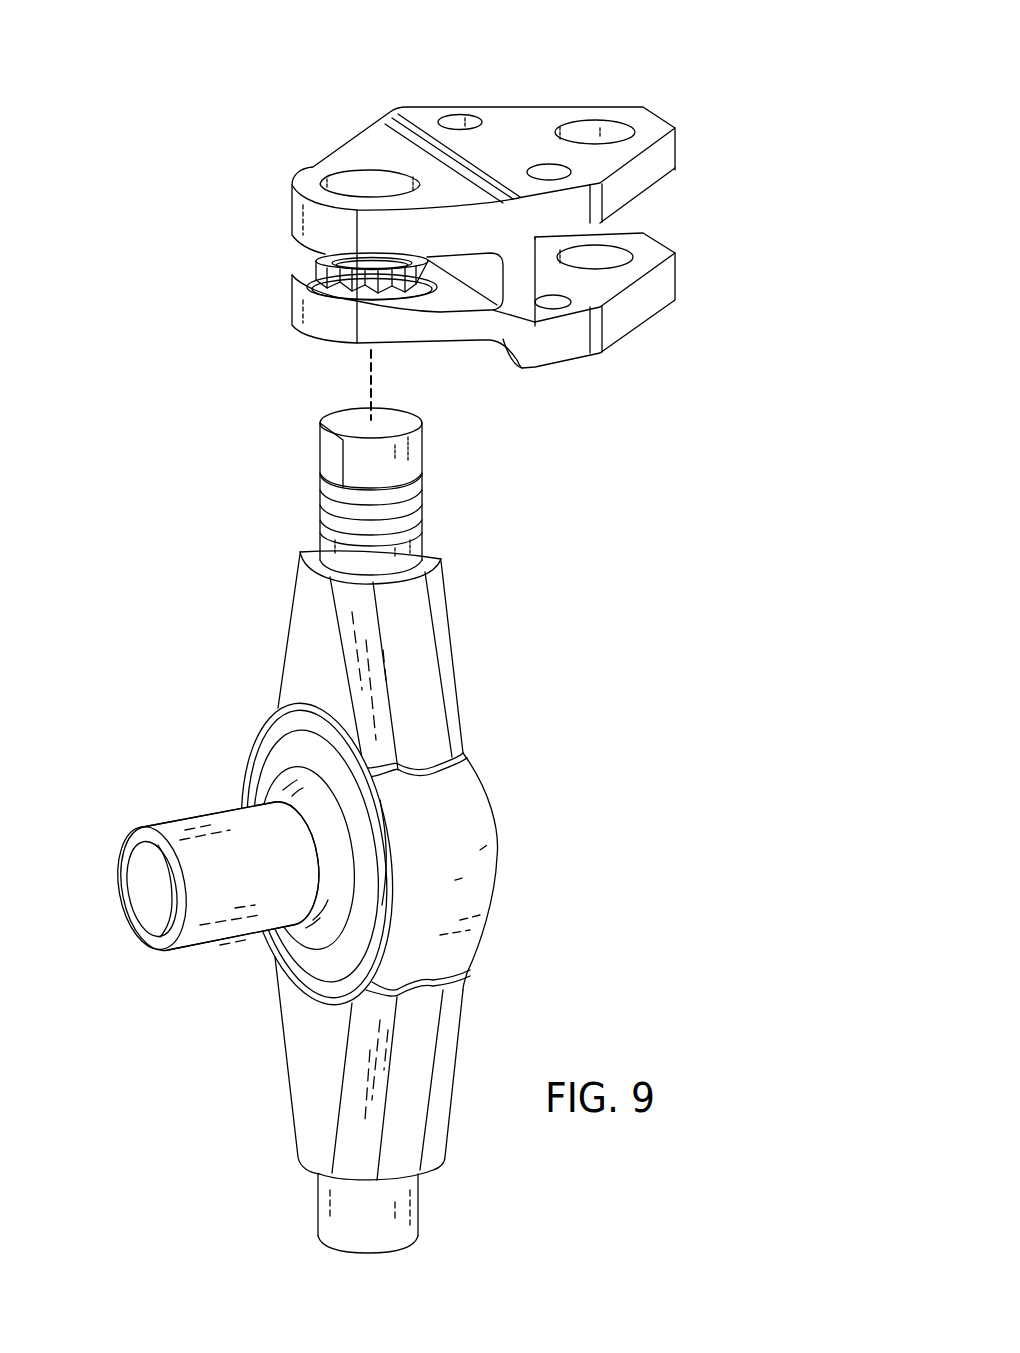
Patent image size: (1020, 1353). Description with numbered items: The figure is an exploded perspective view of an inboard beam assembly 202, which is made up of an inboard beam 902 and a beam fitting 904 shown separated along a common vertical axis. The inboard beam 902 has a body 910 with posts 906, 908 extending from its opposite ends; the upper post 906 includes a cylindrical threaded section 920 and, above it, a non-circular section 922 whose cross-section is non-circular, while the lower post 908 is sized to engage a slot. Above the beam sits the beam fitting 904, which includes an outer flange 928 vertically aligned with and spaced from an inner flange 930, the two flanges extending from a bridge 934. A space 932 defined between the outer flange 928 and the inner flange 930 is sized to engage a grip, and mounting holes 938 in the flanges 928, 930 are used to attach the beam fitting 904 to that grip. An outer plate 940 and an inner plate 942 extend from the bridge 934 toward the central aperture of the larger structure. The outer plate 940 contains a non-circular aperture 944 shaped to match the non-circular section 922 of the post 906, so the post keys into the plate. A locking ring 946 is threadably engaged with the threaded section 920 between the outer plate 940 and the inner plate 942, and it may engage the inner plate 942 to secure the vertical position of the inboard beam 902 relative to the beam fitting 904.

The inboard beam assembly 202 is at (108, 162).
The inboard beam 902 is at (570, 686).
The beam fitting 904 is at (568, 65).
The post 906 is at (424, 455).
The post 908 is at (420, 1204).
The body 910 is at (488, 912).
The cylindrical threaded section 920 is at (318, 507).
The non-circular section 922 is at (330, 447).
The outer flange 928 is at (678, 150).
The inner flange 930 is at (678, 280).
The space 932 is at (705, 195).
The bridge 934 is at (535, 276).
The mounting holes 938 is at (455, 122).
The outer plate 940 is at (292, 210).
The inner plate 942 is at (292, 307).
The non-circular aperture 944 is at (352, 180).
The locking ring 946 is at (316, 266).